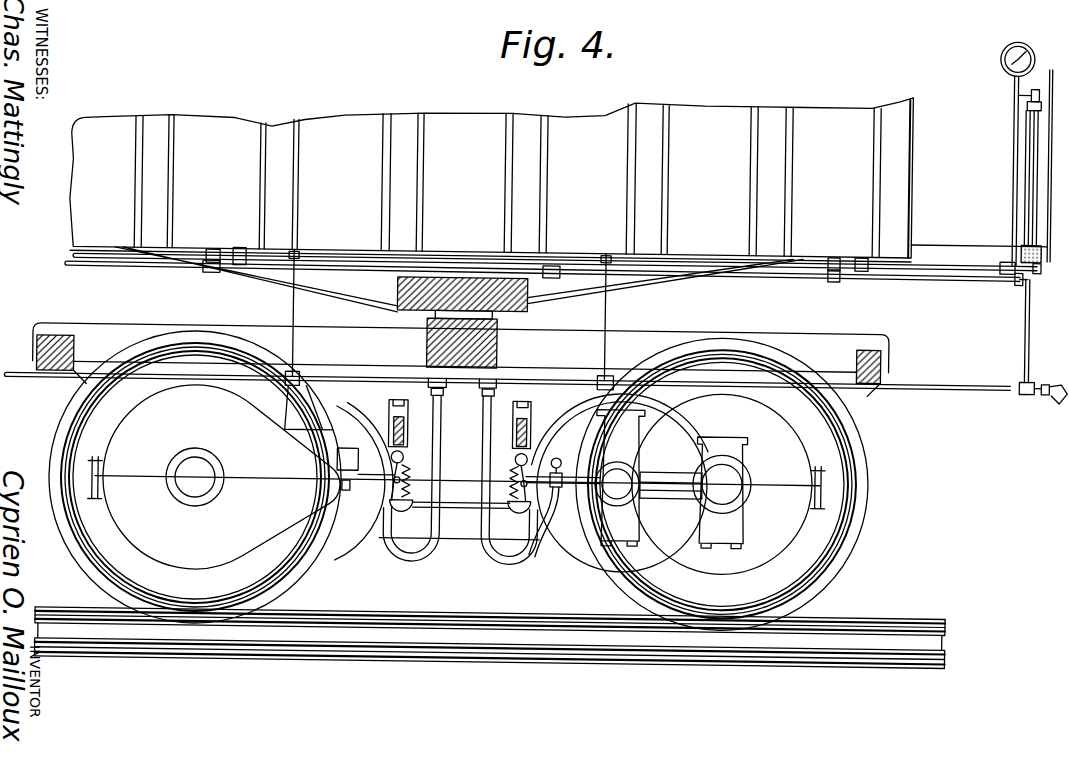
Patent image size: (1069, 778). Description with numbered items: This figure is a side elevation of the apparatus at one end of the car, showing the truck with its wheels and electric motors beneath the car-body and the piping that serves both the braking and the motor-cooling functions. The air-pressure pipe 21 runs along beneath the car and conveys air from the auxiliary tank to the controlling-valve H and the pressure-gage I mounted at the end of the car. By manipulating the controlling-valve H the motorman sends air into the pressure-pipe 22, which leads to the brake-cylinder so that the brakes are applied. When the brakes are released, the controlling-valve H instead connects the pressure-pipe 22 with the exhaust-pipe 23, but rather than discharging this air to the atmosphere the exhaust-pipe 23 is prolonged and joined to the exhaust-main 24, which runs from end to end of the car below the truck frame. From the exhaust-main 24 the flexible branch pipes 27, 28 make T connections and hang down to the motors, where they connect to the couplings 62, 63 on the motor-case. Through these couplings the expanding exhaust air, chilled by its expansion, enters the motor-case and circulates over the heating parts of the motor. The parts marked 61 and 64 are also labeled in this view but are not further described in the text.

The air-pressure pipe 21 is at (90, 259).
The pressure-pipe 22 is at (114, 268).
The exhaust-pipe 23 is at (1024, 306).
The exhaust-main 24 is at (948, 377).
The branch pipe 27 is at (440, 414).
The branch pipe 28 is at (484, 453).
The valve 61 is at (555, 465).
The coupling 62 is at (553, 493).
The coupling 63 is at (619, 478).
The gear casing 64 is at (344, 553).
The controlling-valve H is at (1017, 166).
The pressure-gage I is at (1007, 154).